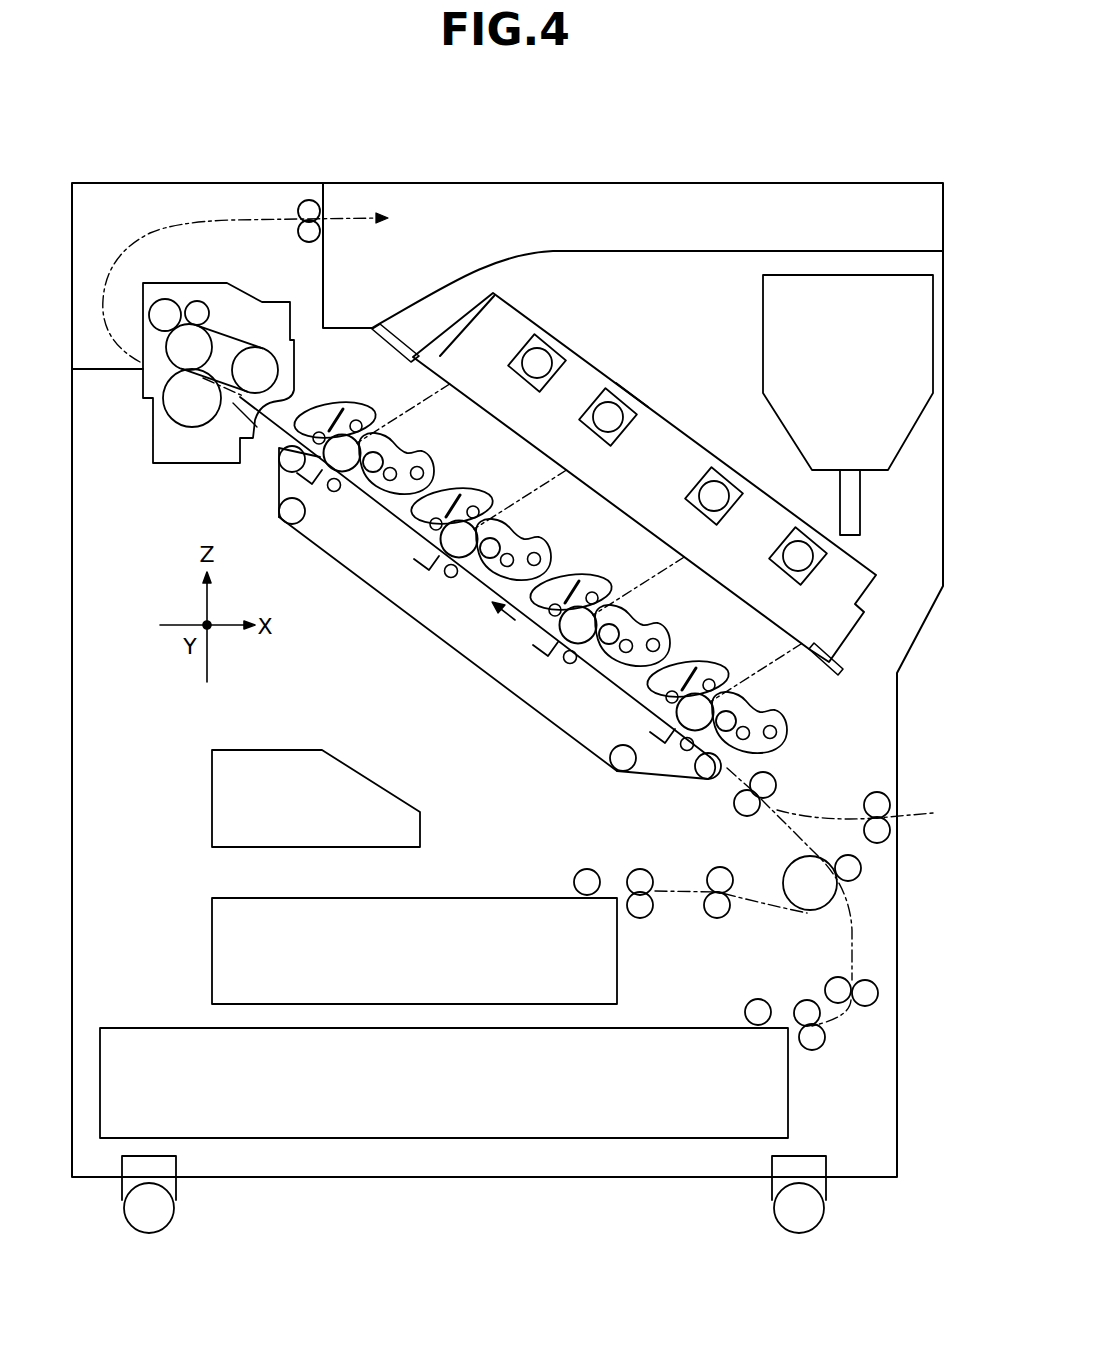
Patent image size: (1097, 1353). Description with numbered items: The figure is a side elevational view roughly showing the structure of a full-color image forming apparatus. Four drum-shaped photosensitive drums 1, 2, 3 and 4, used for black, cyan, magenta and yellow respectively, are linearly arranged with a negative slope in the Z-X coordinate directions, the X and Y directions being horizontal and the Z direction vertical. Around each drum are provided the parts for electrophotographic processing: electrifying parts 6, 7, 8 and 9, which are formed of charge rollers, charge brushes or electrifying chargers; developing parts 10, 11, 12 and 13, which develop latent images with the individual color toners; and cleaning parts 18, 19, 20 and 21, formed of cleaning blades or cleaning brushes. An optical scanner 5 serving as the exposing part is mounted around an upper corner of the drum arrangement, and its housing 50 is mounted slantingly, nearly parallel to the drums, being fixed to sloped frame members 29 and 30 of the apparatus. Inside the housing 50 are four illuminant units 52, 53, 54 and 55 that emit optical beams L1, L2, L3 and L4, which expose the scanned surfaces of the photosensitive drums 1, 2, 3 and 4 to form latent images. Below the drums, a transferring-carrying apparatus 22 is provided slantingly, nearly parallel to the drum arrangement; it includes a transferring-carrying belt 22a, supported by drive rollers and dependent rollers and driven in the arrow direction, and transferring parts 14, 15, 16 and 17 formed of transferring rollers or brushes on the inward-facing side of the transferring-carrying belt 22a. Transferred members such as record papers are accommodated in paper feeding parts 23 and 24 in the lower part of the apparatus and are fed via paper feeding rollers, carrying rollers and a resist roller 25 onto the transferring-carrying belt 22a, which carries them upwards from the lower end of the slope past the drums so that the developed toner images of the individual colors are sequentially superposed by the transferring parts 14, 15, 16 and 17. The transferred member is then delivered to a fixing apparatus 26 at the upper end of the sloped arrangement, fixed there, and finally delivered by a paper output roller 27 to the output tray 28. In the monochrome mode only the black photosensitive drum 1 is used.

The photosensitive drum 1 is at (695, 712).
The photosensitive drum 2 is at (578, 625).
The photosensitive drum 3 is at (459, 539).
The photosensitive drum 4 is at (342, 453).
The optical scanner 5 is at (611, 346).
The electrifying part 6 is at (696, 657).
The electrifying part 7 is at (579, 573).
The electrifying part 8 is at (460, 486).
The electrifying part 9 is at (335, 392).
The developing part 10 is at (751, 711).
The developing part 11 is at (632, 624).
The developing part 12 is at (513, 538).
The developing part 13 is at (396, 452).
The transferring part 14 is at (666, 781).
The transferring part 15 is at (588, 696).
The transferring part 16 is at (467, 610).
The transferring part 17 is at (351, 524).
The cleaning part 18 is at (685, 659).
The cleaning part 19 is at (569, 574).
The cleaning part 20 is at (450, 487).
The cleaning part 21 is at (324, 393).
The transferring-carrying apparatus 22 is at (416, 638).
The transferring-carrying belt 22a is at (487, 673).
The paper feeding part 23 is at (245, 925).
The paper feeding part 24 is at (155, 1048).
The resist roller 25 is at (728, 818).
The fixing apparatus 26 is at (197, 450).
The paper output roller 27 is at (303, 195).
The output tray 28 is at (497, 249).
The sloped frame member 29 is at (398, 343).
The sloped frame member 30 is at (841, 661).
The housing 50 is at (633, 387).
The illuminant unit 52 is at (783, 535).
The illuminant unit 53 is at (726, 478).
The illuminant unit 54 is at (666, 396).
The illuminant unit 55 is at (562, 340).
The optical beam L1 is at (783, 685).
The optical beam L2 is at (654, 586).
The optical beam L3 is at (536, 499).
The optical beam L4 is at (418, 413).